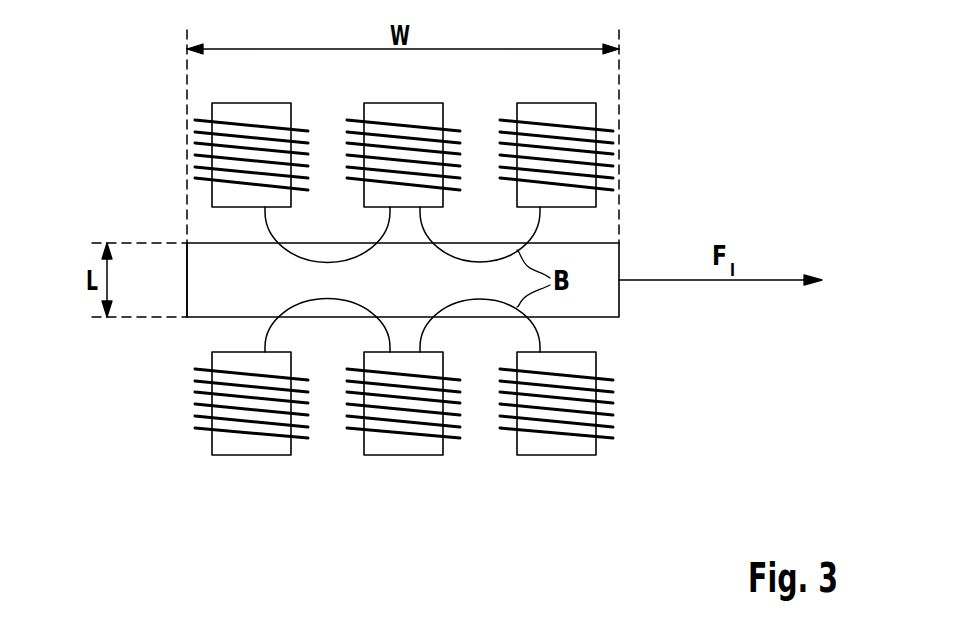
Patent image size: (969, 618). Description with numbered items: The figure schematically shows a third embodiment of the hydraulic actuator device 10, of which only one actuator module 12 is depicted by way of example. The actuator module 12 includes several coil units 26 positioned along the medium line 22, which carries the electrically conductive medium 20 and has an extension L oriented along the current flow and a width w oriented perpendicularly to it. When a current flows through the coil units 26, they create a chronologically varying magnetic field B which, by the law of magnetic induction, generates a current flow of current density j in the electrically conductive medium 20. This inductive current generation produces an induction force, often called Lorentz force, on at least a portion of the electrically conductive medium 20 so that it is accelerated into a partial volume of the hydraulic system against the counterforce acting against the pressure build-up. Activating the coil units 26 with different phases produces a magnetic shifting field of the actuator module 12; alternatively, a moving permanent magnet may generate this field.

The hydraulic actuator device 10 is at (128, 93).
The actuator module 12 is at (309, 492).
The electrically conductive medium 20 is at (600, 302).
The medium line 22 is at (207, 300).
The coil unit 26 is at (250, 126).